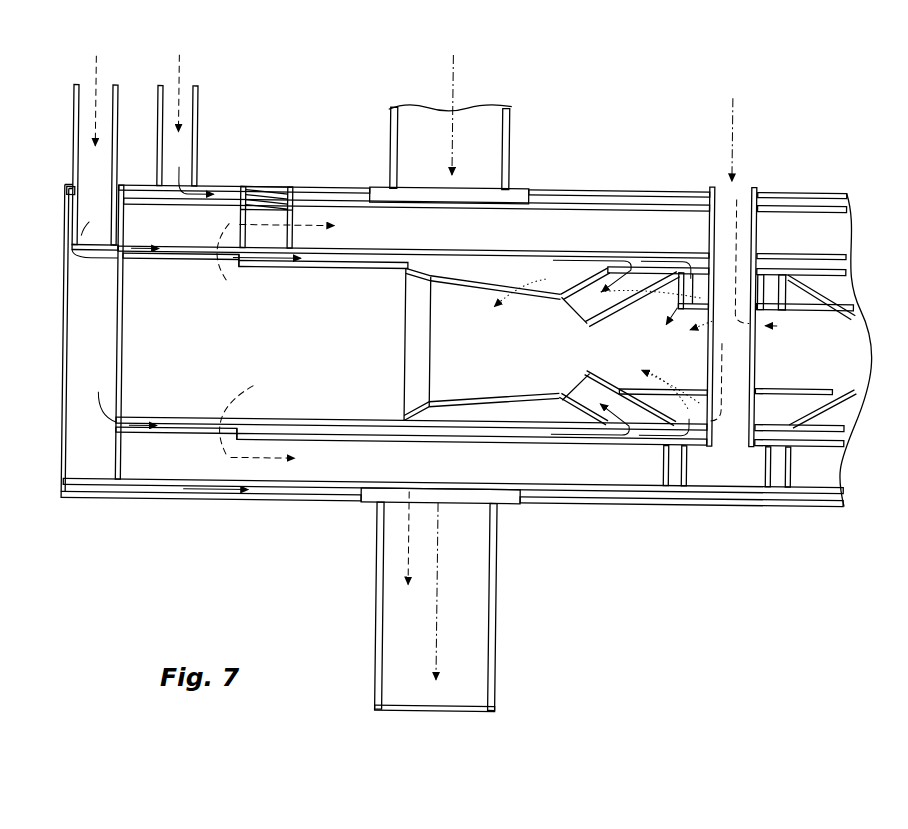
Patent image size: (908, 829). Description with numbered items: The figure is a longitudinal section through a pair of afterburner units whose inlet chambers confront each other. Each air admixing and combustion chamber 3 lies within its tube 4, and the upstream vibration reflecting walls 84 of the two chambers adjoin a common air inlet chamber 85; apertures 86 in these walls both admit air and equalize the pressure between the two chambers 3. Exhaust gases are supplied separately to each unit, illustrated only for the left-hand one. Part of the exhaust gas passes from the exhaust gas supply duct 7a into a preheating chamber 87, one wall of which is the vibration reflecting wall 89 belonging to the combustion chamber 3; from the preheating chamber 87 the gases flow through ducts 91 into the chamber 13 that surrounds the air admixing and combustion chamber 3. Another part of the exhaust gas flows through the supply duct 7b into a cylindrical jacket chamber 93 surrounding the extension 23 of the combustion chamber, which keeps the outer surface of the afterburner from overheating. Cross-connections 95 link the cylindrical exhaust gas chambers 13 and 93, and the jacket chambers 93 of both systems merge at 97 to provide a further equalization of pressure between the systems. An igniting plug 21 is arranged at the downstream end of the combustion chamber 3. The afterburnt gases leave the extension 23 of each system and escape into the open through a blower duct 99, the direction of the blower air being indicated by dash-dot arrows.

The air admixing and combustion chamber 3 is at (283, 344).
The tube 4 is at (472, 288).
The exhaust gas supply duct 7a is at (80, 109).
The supply duct 7b is at (183, 111).
The chamber 13 is at (370, 259).
The igniting plug 21 is at (269, 198).
The extension of the combustion chamber 23 is at (574, 241).
The upstream vibration reflecting wall 84 is at (706, 345).
The common air inlet chamber 85 is at (737, 200).
The apertures 86 is at (712, 356).
The preheating chamber 87 is at (73, 320).
The vibration reflecting wall 89 is at (123, 379).
The ducts 91 is at (178, 263).
The cylindrical jacket chamber 93 is at (619, 198).
The cross-connections 95 is at (677, 480).
The merging point of jacket chambers 97 is at (747, 497).
The blower duct 99 is at (441, 154).